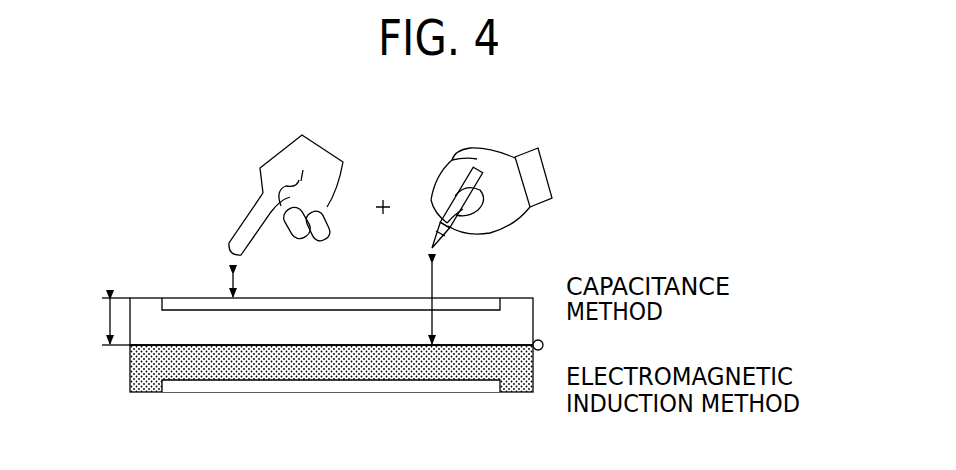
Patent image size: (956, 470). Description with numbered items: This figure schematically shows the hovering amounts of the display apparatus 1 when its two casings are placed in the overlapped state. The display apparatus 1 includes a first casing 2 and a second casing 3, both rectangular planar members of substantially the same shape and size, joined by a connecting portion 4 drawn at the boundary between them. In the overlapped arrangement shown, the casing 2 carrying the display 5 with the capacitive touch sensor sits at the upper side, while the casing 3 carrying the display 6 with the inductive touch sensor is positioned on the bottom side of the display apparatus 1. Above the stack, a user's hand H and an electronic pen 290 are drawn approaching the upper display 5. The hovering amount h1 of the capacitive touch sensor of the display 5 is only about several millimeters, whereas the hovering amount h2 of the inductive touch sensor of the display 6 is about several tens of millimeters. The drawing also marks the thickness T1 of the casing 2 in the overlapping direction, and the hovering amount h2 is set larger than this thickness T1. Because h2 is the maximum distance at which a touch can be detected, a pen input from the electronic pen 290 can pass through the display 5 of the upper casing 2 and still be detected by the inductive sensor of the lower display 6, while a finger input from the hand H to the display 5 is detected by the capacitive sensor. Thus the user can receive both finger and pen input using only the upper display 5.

The display apparatus 1 is at (156, 146).
The casing 2 is at (513, 298).
The casing 3 is at (513, 392).
The connecting portion 4 is at (544, 345).
The display 5 is at (193, 298).
The display 6 is at (193, 392).
The user's hand H is at (281, 146).
The electronic pen 290 is at (480, 146).
The hovering amount h1 is at (252, 284).
The hovering amount h2 is at (451, 303).
The thickness T1 is at (103, 321).